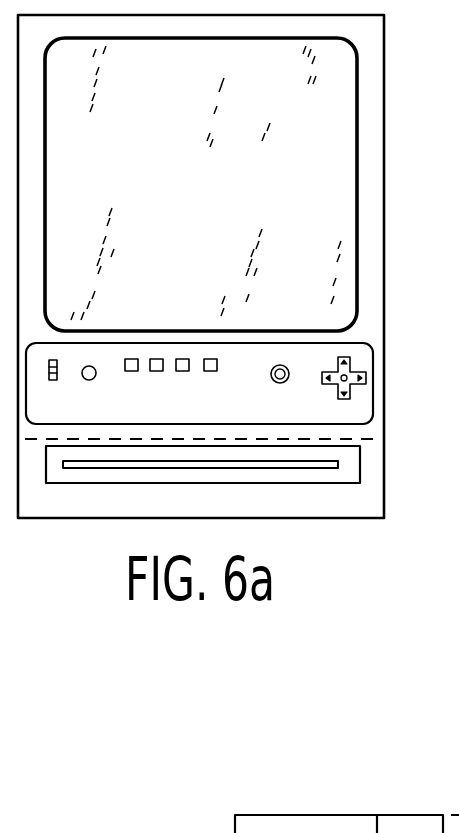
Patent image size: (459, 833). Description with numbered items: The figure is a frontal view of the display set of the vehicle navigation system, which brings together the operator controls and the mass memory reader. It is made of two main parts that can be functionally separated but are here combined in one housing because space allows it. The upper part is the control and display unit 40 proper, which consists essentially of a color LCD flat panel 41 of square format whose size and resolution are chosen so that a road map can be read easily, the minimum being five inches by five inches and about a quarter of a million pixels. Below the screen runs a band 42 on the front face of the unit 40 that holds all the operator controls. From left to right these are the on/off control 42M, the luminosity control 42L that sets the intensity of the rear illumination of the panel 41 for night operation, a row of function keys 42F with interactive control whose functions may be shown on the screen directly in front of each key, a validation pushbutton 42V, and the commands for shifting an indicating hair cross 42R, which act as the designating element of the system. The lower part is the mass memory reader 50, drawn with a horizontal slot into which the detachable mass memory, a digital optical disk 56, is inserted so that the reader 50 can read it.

The control and display unit 40 is at (425, 247).
The color LCD flat panel 41 is at (347, 260).
The band 42 is at (364, 362).
The on/off control 42M is at (52, 381).
The luminosity control 42L is at (94, 378).
The function keys 42F is at (238, 379).
The validation pushbutton 42V is at (273, 381).
The commands for shifting an indicating hair cross 42R is at (349, 399).
The mass memory reader 50 is at (374, 480).
The digital optical disk 56 is at (252, 476).